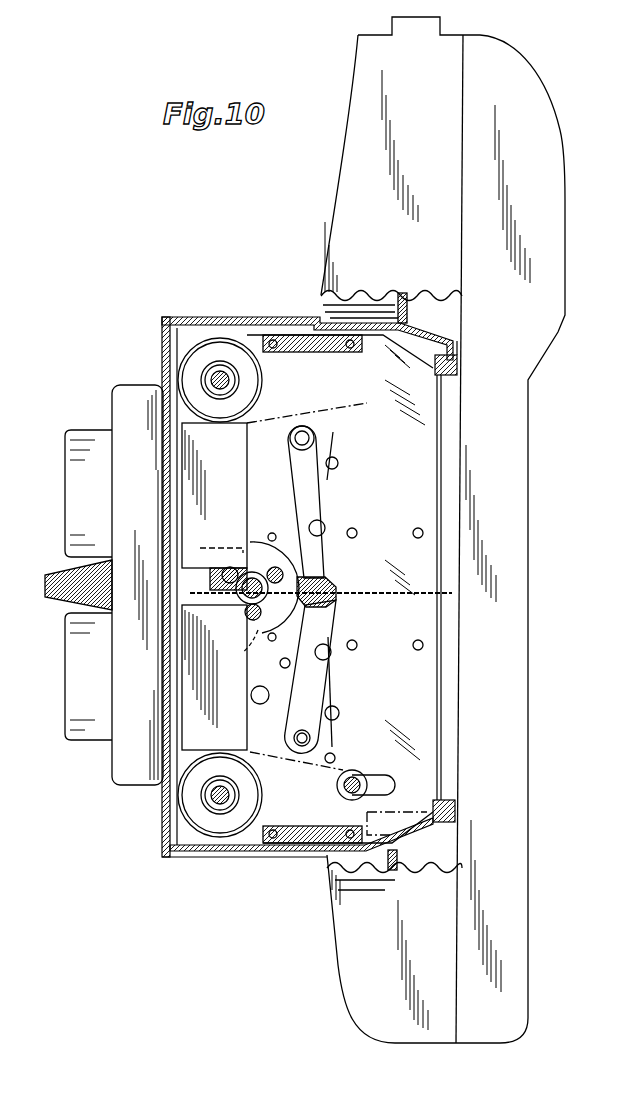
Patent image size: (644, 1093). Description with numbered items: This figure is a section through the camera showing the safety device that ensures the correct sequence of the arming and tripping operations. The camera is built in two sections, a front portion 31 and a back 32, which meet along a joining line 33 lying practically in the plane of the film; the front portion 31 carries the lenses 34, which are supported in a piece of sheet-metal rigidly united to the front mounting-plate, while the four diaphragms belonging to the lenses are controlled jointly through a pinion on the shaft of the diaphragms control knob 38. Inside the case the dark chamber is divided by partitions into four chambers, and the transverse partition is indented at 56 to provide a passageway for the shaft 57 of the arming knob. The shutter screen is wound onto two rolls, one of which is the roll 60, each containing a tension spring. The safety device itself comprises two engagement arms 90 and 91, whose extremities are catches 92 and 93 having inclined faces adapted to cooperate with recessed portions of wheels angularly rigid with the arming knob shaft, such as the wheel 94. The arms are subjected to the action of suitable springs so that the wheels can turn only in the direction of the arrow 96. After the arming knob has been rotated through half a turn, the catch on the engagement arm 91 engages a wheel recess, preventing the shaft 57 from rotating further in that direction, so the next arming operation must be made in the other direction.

The front portion 31 is at (360, 78).
The back 32 is at (525, 80).
The parting line 33 is at (463, 88).
The lenses 34 is at (70, 505).
The diaphragms control knob 38 is at (62, 573).
The indentation 56 is at (259, 622).
The shaft 57 is at (252, 572).
The roll 60 is at (262, 387).
The engagement arm 90 is at (323, 485).
The engagement arm 91 is at (328, 625).
The catch 92 is at (298, 575).
The catch 93 is at (298, 607).
The wheel 94 is at (258, 632).
The arrow 96 is at (223, 561).